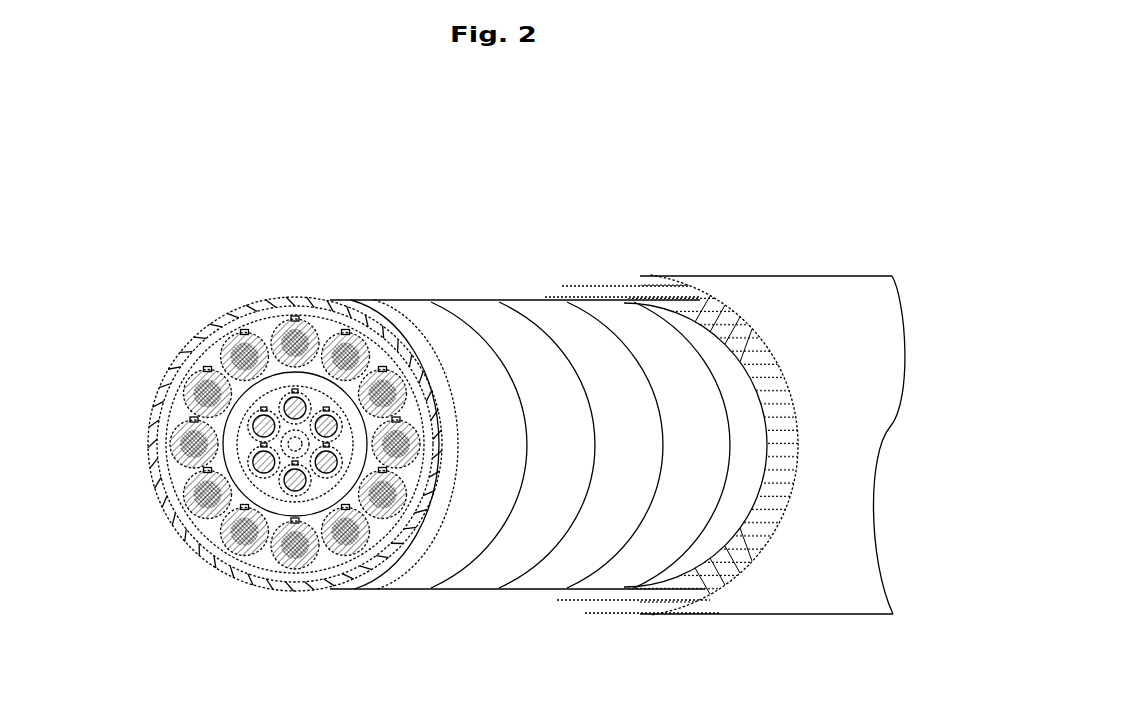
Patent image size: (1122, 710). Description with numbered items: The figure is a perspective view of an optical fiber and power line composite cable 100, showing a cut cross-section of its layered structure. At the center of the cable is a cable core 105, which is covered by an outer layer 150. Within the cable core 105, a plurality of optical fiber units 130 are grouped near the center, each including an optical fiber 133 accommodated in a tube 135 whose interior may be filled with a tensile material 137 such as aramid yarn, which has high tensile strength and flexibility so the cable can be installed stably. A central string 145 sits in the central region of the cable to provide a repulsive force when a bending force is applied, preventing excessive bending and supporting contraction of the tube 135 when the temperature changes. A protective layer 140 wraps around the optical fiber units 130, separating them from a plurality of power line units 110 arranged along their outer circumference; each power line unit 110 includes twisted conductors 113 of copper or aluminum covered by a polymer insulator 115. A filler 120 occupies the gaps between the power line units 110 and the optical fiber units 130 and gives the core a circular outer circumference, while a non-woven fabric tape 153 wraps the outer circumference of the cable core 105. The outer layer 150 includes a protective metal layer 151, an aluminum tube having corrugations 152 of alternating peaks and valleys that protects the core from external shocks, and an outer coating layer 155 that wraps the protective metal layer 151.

The optical fiber and power line composite cable 100 is at (152, 218).
The cable core 105 is at (277, 314).
The power line unit 110 is at (210, 344).
The conductor 113 is at (185, 358).
The insulator 115 is at (230, 346).
The filler 120 is at (262, 330).
The optical fiber unit 130 is at (231, 509).
The optical fiber 133 is at (281, 450).
The tube 135 is at (251, 465).
The tensile material 137 is at (282, 484).
The protective layer 140 is at (227, 428).
The central string 145 is at (176, 451).
The outer layer 150 is at (610, 409).
The protective metal layer 151 is at (518, 338).
The corrugations 152 is at (448, 580).
The non-woven fabric tape 153 is at (334, 322).
The outer coating layer 155 is at (764, 400).